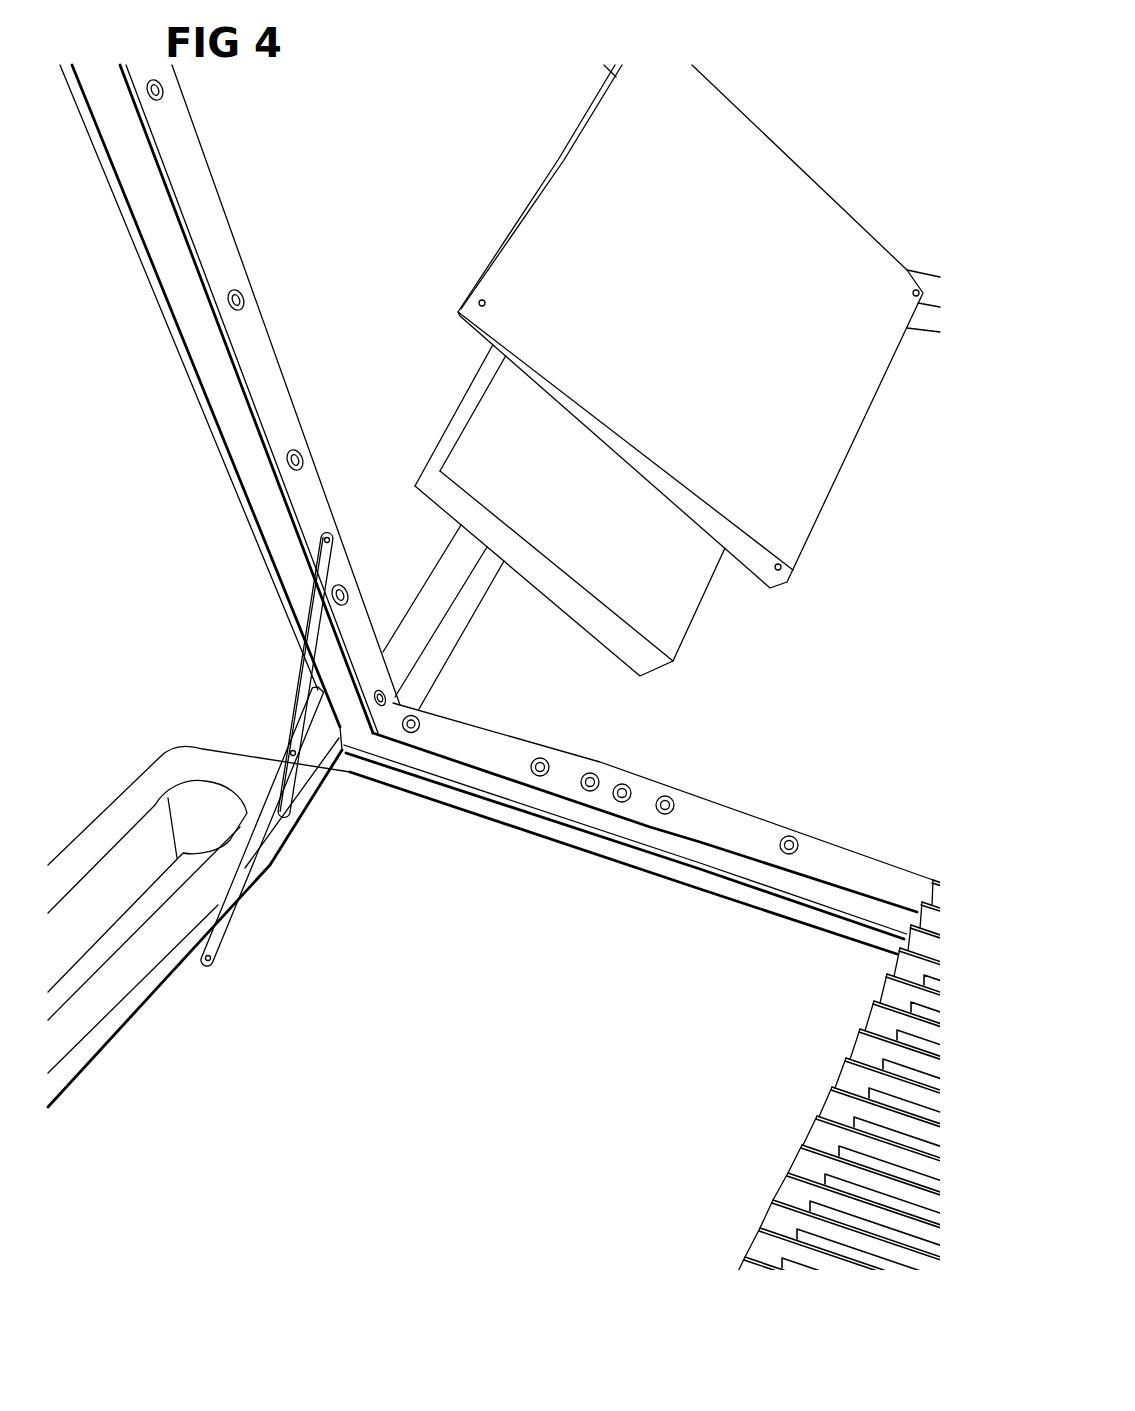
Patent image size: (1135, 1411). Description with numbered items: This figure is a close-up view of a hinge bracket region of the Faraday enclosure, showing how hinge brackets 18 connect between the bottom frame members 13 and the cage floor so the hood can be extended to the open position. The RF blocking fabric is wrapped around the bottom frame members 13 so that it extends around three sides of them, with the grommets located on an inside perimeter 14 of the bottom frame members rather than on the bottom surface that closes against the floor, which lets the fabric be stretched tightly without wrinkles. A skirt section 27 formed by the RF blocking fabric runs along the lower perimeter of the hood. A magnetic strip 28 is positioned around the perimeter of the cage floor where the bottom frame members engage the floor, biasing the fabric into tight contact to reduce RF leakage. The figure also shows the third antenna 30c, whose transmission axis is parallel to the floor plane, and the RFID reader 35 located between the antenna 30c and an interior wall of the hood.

The bottom frame members 13 is at (248, 455).
The inside perimeter 14 is at (245, 315).
The hinge brackets 18 is at (305, 703).
The skirt section 27 is at (158, 303).
The magnetic strip 28 is at (105, 1037).
The third antenna 30c is at (717, 398).
The RFID reader 35 is at (605, 565).